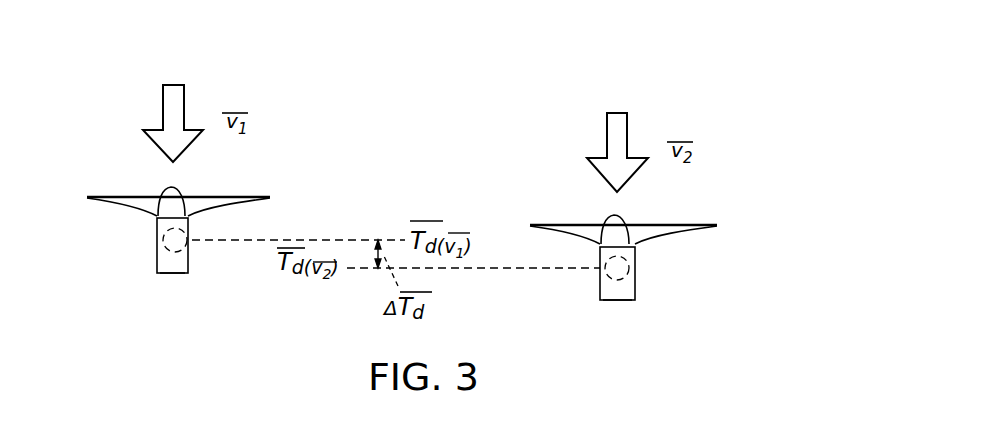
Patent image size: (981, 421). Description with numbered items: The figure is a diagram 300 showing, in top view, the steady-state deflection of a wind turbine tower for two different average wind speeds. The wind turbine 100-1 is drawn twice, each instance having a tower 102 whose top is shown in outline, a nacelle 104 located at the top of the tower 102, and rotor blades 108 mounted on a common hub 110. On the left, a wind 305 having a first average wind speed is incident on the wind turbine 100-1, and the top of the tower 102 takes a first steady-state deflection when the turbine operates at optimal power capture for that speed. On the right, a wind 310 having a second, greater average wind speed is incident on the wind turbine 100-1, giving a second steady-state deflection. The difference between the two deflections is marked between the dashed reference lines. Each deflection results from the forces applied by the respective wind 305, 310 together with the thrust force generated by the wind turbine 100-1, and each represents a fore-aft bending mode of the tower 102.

The diagram 300 is at (728, 60).
The wind 305 is at (184, 103).
The wind 310 is at (628, 130).
The rotor blades 108 is at (105, 196).
The hub 110 is at (177, 193).
The wind turbine 100-1 is at (185, 287).
The tower 102 is at (157, 250).
The nacelle 104 is at (165, 275).